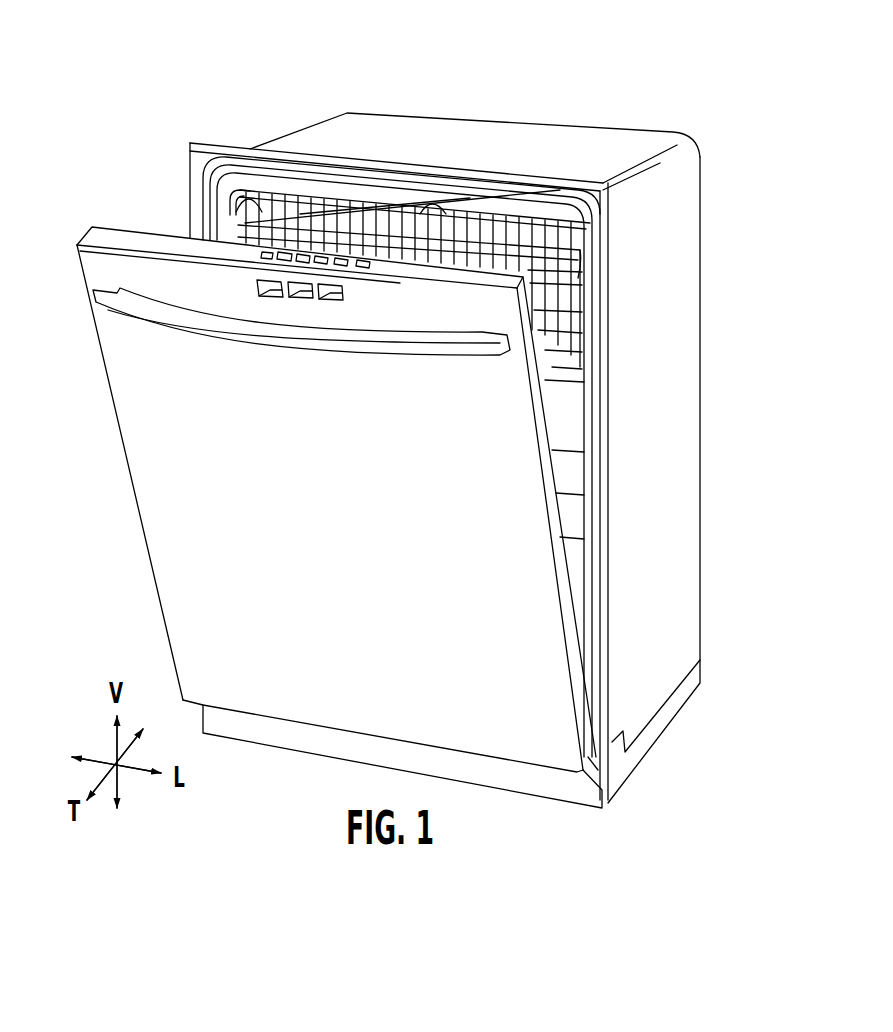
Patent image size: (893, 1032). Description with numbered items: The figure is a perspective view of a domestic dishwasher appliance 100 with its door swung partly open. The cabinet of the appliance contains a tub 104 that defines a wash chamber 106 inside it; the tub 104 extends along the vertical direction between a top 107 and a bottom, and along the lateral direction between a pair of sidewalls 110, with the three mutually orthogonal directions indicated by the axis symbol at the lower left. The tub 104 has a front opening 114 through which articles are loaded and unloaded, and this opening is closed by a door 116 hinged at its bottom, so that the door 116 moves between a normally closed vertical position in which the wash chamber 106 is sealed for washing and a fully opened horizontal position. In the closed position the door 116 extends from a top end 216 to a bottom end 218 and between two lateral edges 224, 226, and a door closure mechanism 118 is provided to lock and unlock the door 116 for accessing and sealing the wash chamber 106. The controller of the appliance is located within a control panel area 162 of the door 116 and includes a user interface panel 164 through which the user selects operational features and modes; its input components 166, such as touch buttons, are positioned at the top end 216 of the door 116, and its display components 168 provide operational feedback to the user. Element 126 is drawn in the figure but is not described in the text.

The dishwasher appliance 100 is at (207, 80).
The tub 104 is at (280, 173).
The wash chamber 106 is at (340, 192).
The top 107 is at (230, 193).
The sidewalls 110 is at (233, 228).
The front opening 114 is at (487, 270).
The door 116 is at (163, 537).
The door closure mechanism 118 is at (403, 200).
The rack rail 126 is at (407, 187).
The control panel area 162 is at (147, 243).
The user interface panel 164 is at (352, 291).
The input components 166 is at (278, 257).
The display components 168 is at (267, 293).
The top end 216 is at (482, 272).
The bottom end 218 is at (570, 777).
The lateral edge 224 is at (130, 482).
The lateral edge 226 is at (552, 480).